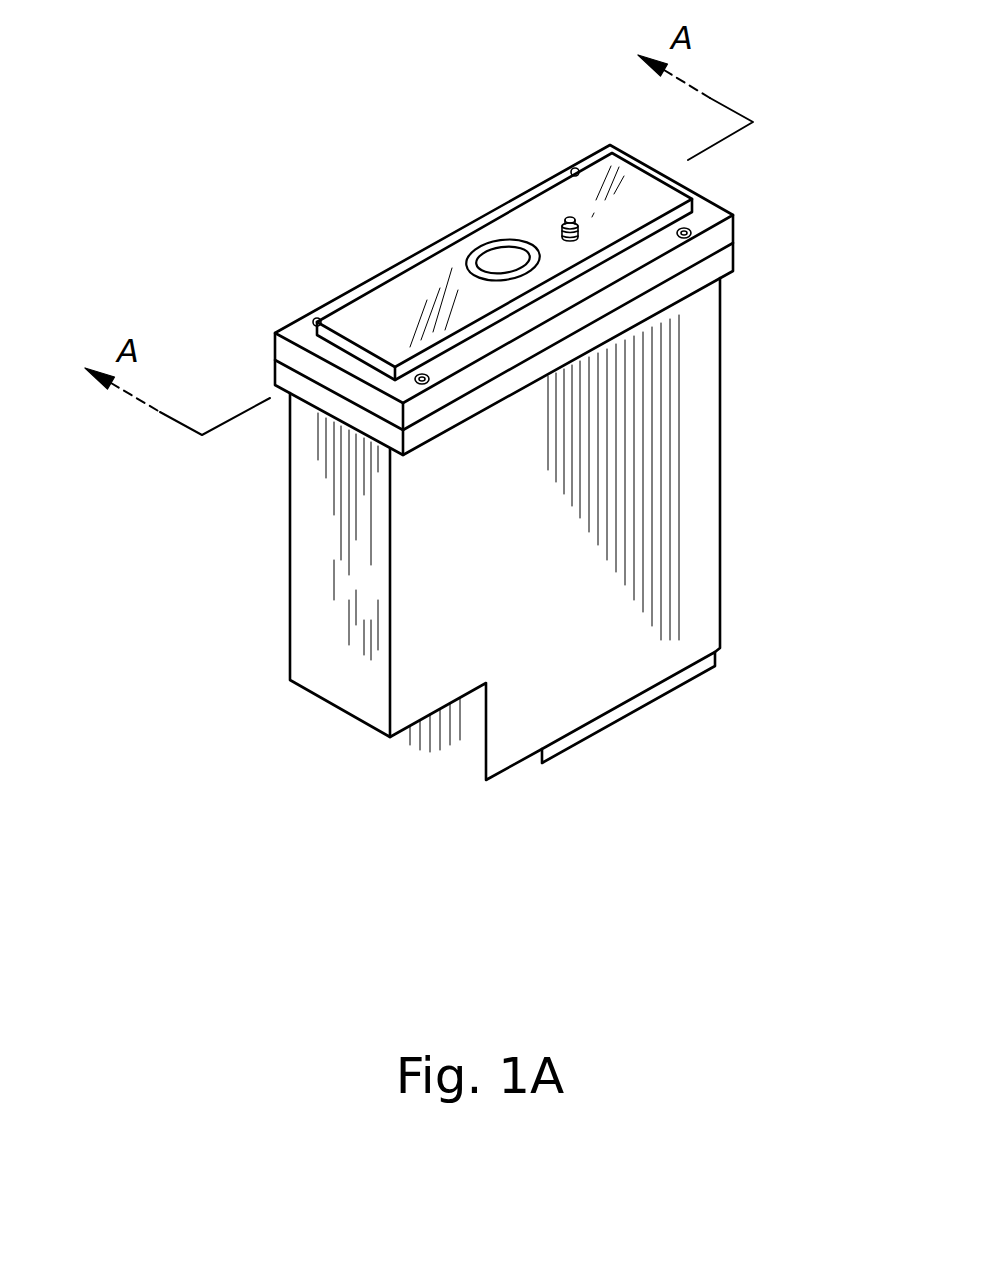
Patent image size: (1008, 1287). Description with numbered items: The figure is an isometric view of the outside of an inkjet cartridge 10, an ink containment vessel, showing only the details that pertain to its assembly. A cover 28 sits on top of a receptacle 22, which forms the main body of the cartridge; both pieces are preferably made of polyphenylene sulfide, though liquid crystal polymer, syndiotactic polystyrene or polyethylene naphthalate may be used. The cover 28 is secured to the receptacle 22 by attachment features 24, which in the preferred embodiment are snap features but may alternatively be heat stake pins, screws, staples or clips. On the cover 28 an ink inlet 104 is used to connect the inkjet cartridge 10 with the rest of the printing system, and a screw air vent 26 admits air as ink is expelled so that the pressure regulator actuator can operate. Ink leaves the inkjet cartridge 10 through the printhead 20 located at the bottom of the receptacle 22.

The inkjet cartridge 10 is at (530, 473).
The printhead 20 is at (668, 693).
The receptacle 22 is at (700, 428).
The attachment features 24 is at (578, 168).
The screw air vent 26 is at (488, 262).
The cover 28 is at (567, 192).
The ink inlet 104 is at (563, 217).